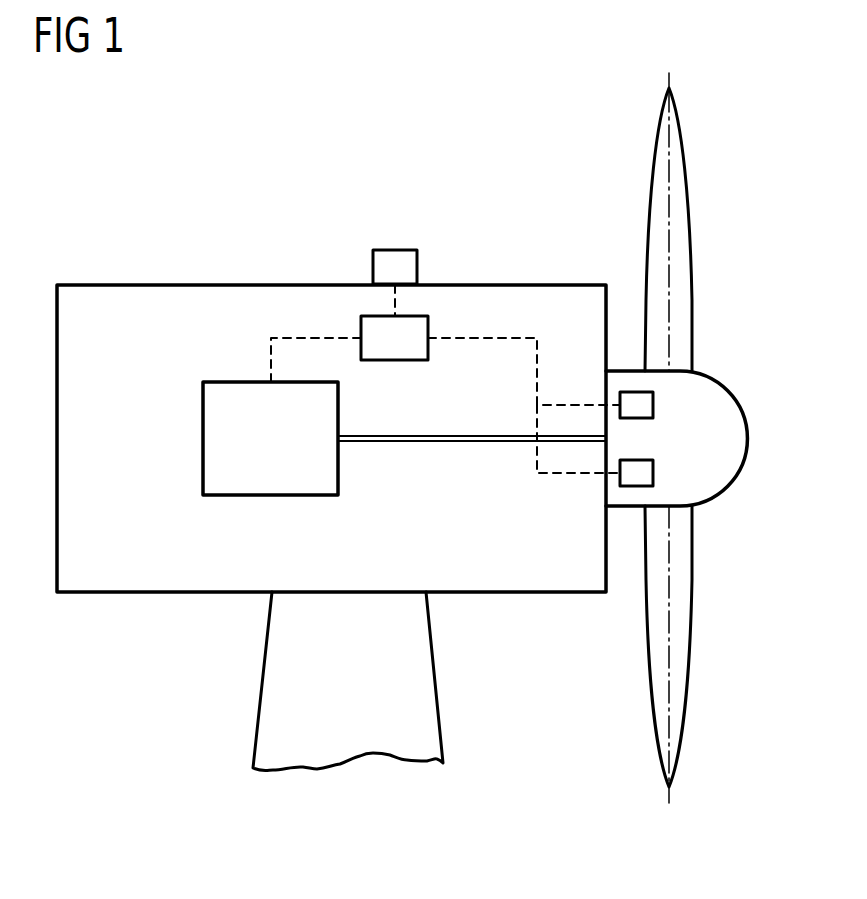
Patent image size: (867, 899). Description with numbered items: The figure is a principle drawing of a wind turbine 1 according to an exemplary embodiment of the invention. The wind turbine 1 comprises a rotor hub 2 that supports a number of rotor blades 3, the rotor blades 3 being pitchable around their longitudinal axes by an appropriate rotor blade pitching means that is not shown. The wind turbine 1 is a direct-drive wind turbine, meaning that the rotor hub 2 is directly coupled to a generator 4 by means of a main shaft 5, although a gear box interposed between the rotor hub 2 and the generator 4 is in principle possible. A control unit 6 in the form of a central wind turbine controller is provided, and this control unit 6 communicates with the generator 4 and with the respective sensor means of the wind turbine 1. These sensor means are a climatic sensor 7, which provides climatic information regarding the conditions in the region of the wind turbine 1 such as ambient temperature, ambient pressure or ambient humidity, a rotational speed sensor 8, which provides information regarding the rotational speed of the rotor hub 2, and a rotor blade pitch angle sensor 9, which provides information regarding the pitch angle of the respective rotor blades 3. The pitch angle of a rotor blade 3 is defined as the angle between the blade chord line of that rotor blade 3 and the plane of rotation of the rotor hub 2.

The wind turbine 1 is at (306, 112).
The rotor hub 2 is at (748, 448).
The rotor blades 3 is at (692, 297).
The generator 4 is at (339, 473).
The main shaft 5 is at (460, 442).
The control unit 6 is at (370, 316).
The climatic sensor 7 is at (418, 265).
The rotational speed sensor 8 is at (653, 405).
The rotor blade pitch angle sensor 9 is at (653, 473).